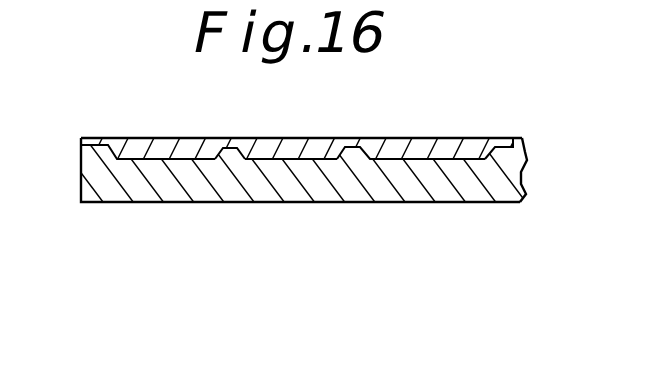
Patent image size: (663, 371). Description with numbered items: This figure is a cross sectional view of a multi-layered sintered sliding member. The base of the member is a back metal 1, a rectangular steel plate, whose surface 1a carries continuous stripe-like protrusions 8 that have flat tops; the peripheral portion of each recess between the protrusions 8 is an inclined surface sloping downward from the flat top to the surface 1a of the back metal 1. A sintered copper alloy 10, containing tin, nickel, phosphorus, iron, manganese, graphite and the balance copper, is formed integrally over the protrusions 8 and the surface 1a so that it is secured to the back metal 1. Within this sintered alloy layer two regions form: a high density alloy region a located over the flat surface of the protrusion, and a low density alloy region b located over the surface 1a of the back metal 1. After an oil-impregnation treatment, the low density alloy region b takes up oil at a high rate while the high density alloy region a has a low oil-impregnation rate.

The back metal 1 is at (412, 220).
The surface of the back metal 1a is at (480, 140).
The sintered copper alloy 10 is at (150, 138).
The high density alloy region a is at (230, 138).
The low density alloy region b is at (308, 138).
The continuous stripe-like protrusions 8 is at (372, 150).